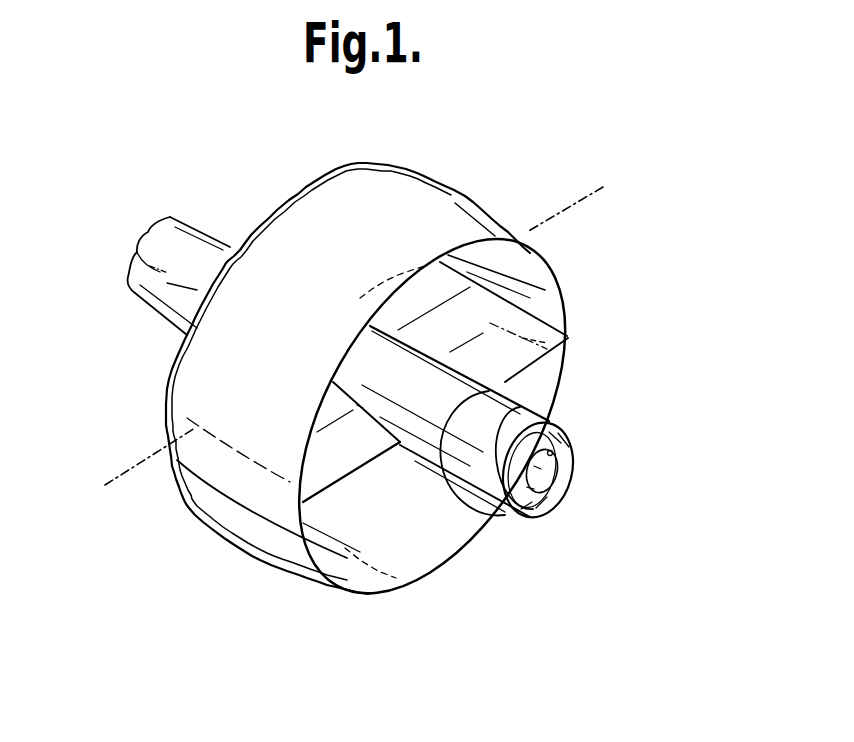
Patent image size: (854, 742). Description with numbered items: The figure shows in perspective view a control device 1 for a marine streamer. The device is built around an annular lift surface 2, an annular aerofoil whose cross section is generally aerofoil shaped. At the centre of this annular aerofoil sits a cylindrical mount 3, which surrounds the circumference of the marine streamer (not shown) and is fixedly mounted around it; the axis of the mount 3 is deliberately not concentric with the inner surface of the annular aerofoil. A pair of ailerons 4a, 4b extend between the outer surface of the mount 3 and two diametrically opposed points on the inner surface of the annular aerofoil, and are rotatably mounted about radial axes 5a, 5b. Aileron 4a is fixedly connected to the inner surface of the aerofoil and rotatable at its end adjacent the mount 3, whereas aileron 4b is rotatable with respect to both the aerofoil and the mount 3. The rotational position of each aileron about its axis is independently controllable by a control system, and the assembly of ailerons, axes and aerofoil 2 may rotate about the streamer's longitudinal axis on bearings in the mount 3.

The control device 1 is at (243, 180).
The annular lift surface 2 is at (423, 200).
The cylindrical mount 3 is at (537, 510).
The aileron 4a is at (545, 340).
The aileron 4b is at (342, 458).
The radial axis 5a is at (570, 203).
The radial axis 5b is at (133, 465).